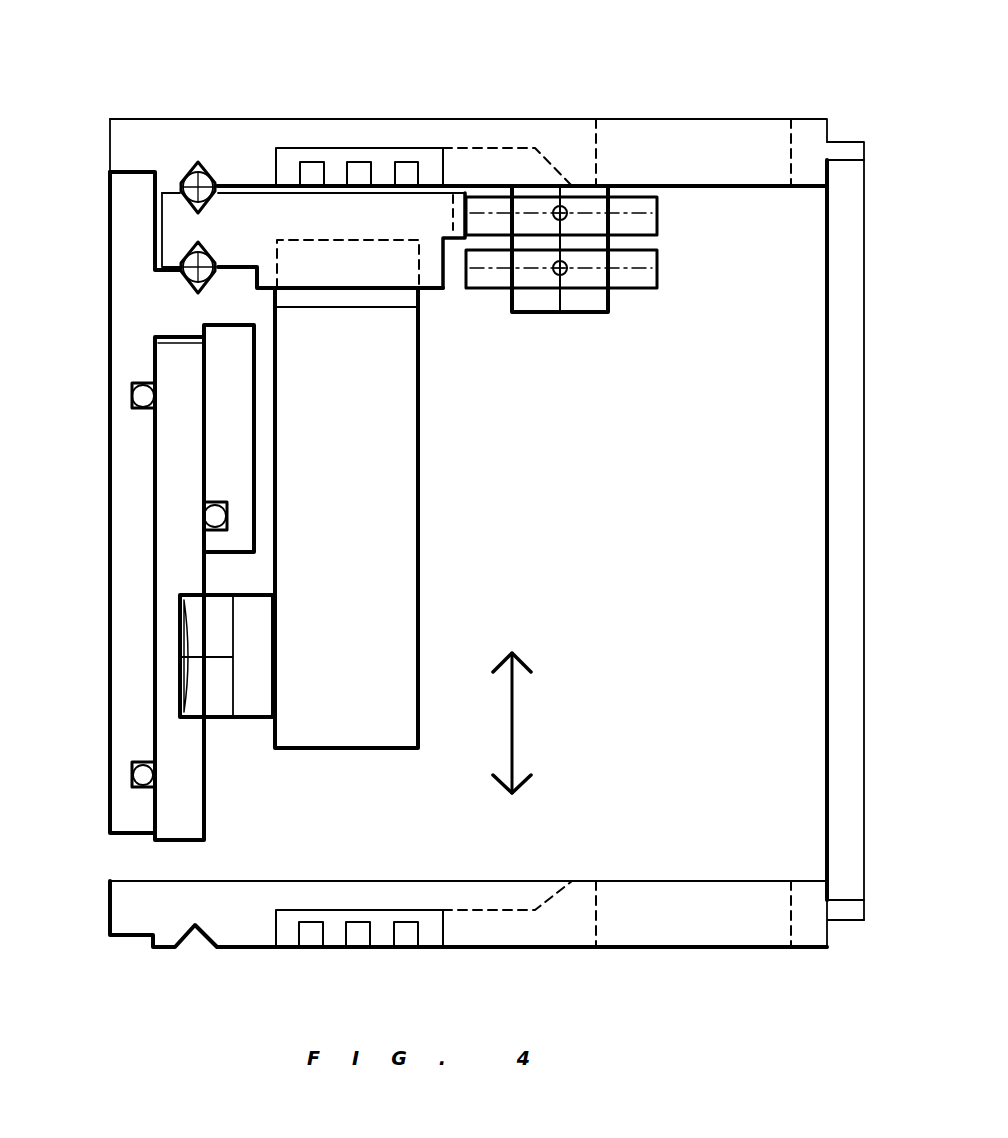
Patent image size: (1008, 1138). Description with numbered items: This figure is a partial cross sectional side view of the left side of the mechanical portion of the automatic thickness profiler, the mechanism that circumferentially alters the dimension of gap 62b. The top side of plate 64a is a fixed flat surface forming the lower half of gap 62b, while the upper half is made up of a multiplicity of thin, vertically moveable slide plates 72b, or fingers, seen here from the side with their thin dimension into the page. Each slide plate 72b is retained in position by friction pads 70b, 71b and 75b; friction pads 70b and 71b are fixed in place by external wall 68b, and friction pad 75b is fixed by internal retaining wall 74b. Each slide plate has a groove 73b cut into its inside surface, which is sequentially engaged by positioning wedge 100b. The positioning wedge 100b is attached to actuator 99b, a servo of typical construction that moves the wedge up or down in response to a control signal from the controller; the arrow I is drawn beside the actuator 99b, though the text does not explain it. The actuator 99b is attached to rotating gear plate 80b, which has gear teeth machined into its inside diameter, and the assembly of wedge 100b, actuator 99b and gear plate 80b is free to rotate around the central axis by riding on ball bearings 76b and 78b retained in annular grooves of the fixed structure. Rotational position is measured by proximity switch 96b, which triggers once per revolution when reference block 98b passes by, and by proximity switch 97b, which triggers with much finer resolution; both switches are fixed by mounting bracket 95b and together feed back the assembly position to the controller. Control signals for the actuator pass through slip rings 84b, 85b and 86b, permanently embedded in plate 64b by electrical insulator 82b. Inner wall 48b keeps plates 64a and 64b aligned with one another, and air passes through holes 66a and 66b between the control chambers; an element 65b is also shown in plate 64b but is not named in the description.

The inner wall 48b is at (826, 585).
The gap 62b is at (178, 863).
The plate 64a is at (110, 914).
The plate 64b is at (693, 118).
The fastener 65b is at (550, 162).
The holes 66a is at (784, 915).
The holes 66b is at (793, 146).
The external wall 68b is at (110, 456).
The friction pad 70b is at (132, 774).
The friction pad 71b is at (132, 385).
The slide plate 72b is at (204, 786).
The groove 73b is at (180, 657).
The internal retaining wall 74b is at (254, 423).
The friction pad 75b is at (227, 517).
The ball bearing 76b is at (182, 268).
The ball bearing 78b is at (182, 181).
The rotating gear plate 80b is at (244, 244).
The electrical insulator 82b is at (286, 148).
The slip ring 84b is at (407, 162).
The slip ring 85b is at (359, 162).
The slip ring 86b is at (311, 162).
The mounting bracket 95b is at (563, 312).
The proximity switch 96b is at (658, 268).
The proximity switch 97b is at (658, 213).
The reference block 98b is at (453, 290).
The actuator 99b is at (418, 506).
The positioning wedge 100b is at (227, 717).
The direction of travel I is at (512, 728).